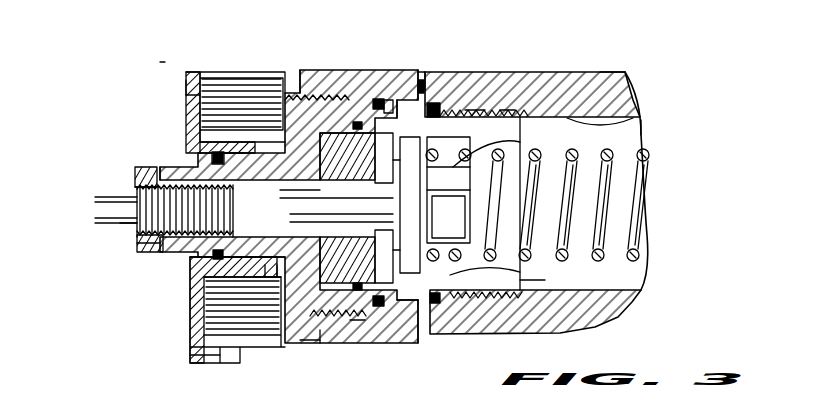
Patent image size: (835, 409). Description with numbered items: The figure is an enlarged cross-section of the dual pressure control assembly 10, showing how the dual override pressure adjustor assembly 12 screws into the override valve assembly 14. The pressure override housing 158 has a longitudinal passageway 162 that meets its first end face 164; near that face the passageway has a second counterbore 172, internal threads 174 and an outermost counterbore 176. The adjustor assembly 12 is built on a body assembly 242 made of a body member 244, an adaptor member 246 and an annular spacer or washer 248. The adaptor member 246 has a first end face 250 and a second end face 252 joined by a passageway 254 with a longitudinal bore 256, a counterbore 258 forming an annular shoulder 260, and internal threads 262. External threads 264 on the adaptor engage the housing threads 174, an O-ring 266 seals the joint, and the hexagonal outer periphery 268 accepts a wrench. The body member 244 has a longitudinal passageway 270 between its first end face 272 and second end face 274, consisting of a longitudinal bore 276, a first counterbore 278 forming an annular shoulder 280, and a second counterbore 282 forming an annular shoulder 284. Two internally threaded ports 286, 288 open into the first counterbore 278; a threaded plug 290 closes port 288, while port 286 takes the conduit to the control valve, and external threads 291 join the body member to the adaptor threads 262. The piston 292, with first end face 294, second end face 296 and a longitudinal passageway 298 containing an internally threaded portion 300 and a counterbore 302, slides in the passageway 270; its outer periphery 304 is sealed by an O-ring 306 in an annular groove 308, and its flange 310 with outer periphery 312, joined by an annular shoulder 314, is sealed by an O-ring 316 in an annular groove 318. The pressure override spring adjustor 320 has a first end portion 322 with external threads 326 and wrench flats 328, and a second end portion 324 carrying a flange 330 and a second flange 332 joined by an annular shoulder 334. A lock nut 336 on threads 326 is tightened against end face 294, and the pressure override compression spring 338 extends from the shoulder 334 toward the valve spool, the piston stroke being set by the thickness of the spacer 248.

The dual pressure control assembly 10 is at (148, 57).
The dual override pressure adjustor assembly 12 is at (334, 58).
The override valve assembly 14 is at (600, 60).
The pressure override housing 158 is at (625, 74).
The longitudinal passageway 162 is at (633, 121).
The first end face 164 is at (420, 72).
The second counterbore 172 is at (640, 126).
The internal threads 174 is at (506, 112).
The counterbore 176 is at (432, 102).
The body assembly 242 is at (300, 68).
The body member 244 is at (185, 87).
The adaptor member 246 is at (311, 70).
The annular spacer or washer 248 is at (390, 107).
The first end face 250 is at (223, 153).
The second end face 252 is at (570, 133).
The passageway 254 is at (520, 269).
The longitudinal bore 256 is at (543, 278).
The counterbore 258 is at (378, 308).
The annular shoulder 260 is at (413, 343).
The internal threads 262 is at (306, 345).
The external threads 264 is at (474, 110).
The O-ring 266 is at (436, 103).
The outer periphery 268 is at (403, 342).
The longitudinal passageway 270 is at (283, 275).
The first end face 272 is at (185, 95).
The second end face 274 is at (435, 304).
The longitudinal bore 276 is at (190, 252).
The first counterbore 278 is at (270, 272).
The annular shoulder 280 is at (255, 254).
The second counterbore 282 is at (356, 335).
The annular shoulder 284 is at (347, 335).
The internally threaded port 286 is at (222, 72).
The internally threaded port 288 is at (202, 308).
The threaded plug 290 is at (200, 353).
The external threads 291 is at (324, 340).
The piston 292 is at (173, 165).
The first end face 294 is at (157, 172).
The second end face 296 is at (400, 126).
The longitudinal passageway 298 is at (240, 186).
The internally threaded portion 300 is at (147, 185).
The counterbore 302 is at (384, 230).
The outer periphery 304 is at (262, 275).
The O-ring 306 is at (220, 153).
The annular groove 308 is at (234, 153).
The flange 310 is at (385, 99).
The outer periphery 312 is at (374, 98).
The annular shoulder 314 is at (318, 178).
The O-ring 316 is at (356, 121).
The annular groove 318 is at (345, 168).
The pressure override spring adjustor 320 is at (275, 219).
The first end portion 322 is at (128, 225).
The second end portion 324 is at (475, 207).
The external threads 326 is at (135, 243).
The wrench flats 328 is at (92, 199).
The flange 330 is at (415, 265).
The second flange 332 is at (520, 142).
The annular shoulder 334 is at (434, 200).
The lock nut 336 is at (140, 247).
The pressure override compression spring 338 is at (612, 152).